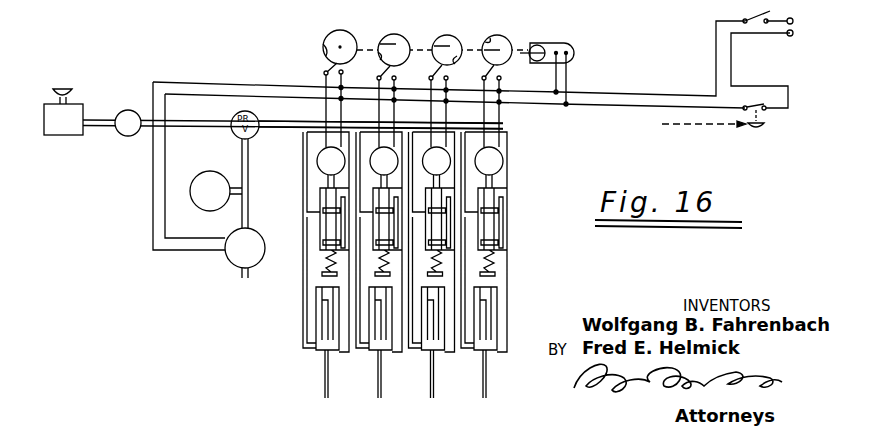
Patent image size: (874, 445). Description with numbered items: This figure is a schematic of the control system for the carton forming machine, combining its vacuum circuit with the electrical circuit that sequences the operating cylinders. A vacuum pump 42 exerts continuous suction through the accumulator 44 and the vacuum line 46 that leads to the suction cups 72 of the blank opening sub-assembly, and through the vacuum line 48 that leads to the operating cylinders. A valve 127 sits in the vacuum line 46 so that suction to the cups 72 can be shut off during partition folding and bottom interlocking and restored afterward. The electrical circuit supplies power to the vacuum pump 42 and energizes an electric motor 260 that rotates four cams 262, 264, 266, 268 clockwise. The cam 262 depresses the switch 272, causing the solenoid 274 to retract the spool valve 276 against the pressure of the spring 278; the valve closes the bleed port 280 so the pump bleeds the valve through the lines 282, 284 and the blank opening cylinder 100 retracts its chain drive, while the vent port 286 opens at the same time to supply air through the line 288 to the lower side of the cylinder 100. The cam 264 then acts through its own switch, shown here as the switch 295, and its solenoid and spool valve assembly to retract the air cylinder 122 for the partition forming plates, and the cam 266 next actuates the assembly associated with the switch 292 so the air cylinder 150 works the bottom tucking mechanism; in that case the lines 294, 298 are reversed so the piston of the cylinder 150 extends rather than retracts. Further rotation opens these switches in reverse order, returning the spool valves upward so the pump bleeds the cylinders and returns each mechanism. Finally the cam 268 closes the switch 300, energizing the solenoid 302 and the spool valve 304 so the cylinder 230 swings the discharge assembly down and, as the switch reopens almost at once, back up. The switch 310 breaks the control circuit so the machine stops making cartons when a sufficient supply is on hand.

The vacuum pump 42 is at (232, 264).
The accumulator 44 is at (212, 171).
The vacuum line 46 is at (100, 127).
The vacuum line 48 is at (292, 121).
The suction cups 72 is at (61, 87).
The blank opening cylinder 100 is at (318, 322).
The air cylinder 122 is at (400, 345).
The valve 127 is at (126, 110).
The air cylinder 150 is at (447, 348).
The operating cylinder 230 is at (500, 345).
The electric motor 260 is at (546, 42).
The cam 262 is at (334, 31).
The cam 264 is at (388, 35).
The cam 266 is at (444, 36).
The cam 268 is at (494, 36).
The switch 272 is at (323, 73).
The solenoid 274 is at (316, 158).
The spool valve 276 is at (322, 228).
The spring 278 is at (340, 280).
The bleed port 280 is at (322, 198).
The line 282 is at (372, 205).
The line 284 is at (357, 315).
The vent port 286 is at (330, 262).
The line 288 is at (312, 310).
The switch 292 is at (423, 106).
The line 294 is at (456, 283).
The switch 295 is at (370, 106).
The line 298 is at (365, 348).
The switch 300 is at (502, 79).
The solenoid 302 is at (503, 157).
The spool valve 304 is at (494, 228).
The switch 310 is at (758, 130).